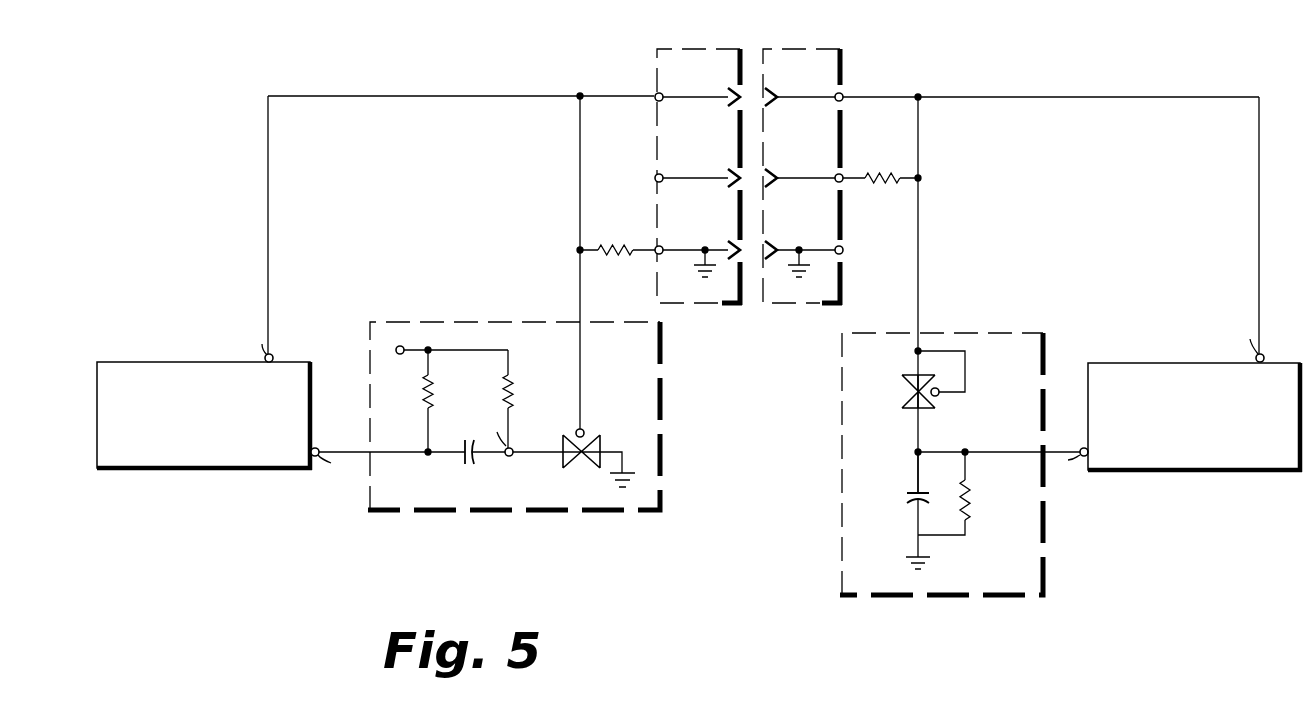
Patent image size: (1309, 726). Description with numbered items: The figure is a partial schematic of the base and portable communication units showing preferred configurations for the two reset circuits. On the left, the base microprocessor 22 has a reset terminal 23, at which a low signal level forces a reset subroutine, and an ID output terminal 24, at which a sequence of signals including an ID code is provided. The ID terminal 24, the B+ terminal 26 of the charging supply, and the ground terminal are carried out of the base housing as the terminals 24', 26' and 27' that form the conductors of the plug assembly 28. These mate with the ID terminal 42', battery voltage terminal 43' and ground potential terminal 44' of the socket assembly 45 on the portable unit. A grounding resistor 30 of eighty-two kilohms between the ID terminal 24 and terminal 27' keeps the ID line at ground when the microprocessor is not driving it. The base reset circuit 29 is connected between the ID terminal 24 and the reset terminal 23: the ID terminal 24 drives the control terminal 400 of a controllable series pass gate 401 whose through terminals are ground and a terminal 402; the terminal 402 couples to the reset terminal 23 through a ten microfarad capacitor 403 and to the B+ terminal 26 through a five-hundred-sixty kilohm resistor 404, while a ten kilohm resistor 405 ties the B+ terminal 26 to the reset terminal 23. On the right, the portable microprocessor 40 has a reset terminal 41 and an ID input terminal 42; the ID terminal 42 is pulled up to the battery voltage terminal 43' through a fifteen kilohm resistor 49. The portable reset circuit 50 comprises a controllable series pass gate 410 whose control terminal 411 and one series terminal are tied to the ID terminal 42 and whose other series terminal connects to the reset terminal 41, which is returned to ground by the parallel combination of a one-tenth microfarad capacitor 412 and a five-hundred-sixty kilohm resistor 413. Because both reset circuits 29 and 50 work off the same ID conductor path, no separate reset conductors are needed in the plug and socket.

The base microprocessor 22 is at (157, 361).
The reset terminal 23 is at (318, 450).
The ID output terminal 24 is at (282, 344).
The B+ terminal 26 is at (412, 353).
The plug assembly 28 is at (736, 50).
The reset circuit 29 is at (460, 322).
The grounding resistor 30 is at (616, 247).
The portable microprocessor 40 is at (1157, 363).
The reset terminal 41 is at (1081, 449).
The ID input terminal 42 is at (1272, 341).
The socket assembly 45 is at (841, 300).
The resistor 49 is at (880, 173).
The reset circuit 50 is at (968, 333).
The ID terminal 24' is at (683, 97).
The B+ terminal 26' is at (683, 178).
The ground terminal 27' is at (683, 240).
The ID terminal 42' is at (822, 92).
The battery voltage terminal 43' is at (822, 163).
The ground potential terminal 44' is at (822, 236).
The control terminal 400 is at (586, 431).
The controllable series pass gate 401 is at (575, 435).
The terminal 402 is at (510, 456).
The capacitor 403 is at (470, 466).
The resistor 404 is at (513, 393).
The resistor 405 is at (433, 393).
The controllable series pass gate 410 is at (908, 407).
The control terminal 411 is at (939, 394).
The capacitor 412 is at (907, 500).
The resistor 413 is at (970, 500).